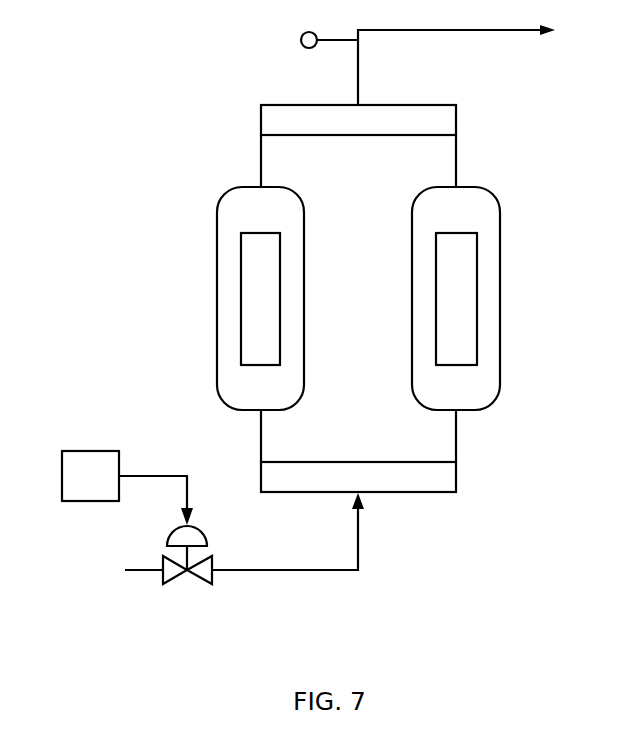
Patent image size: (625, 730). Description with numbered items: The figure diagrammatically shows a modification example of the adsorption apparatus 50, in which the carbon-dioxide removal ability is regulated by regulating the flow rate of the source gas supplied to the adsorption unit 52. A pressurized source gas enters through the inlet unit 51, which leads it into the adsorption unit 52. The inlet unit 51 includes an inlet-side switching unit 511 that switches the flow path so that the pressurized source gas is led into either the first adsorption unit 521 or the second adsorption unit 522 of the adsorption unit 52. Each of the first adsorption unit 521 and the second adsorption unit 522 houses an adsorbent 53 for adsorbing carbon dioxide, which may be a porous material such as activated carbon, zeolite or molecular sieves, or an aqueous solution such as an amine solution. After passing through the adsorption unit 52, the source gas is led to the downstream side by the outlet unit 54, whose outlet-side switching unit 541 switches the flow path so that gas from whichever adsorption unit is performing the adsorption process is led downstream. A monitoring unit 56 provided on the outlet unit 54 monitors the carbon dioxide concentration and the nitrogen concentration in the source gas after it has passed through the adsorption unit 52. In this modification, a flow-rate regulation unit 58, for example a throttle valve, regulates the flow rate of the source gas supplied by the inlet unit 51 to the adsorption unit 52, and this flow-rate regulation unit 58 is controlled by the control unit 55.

The adsorption apparatus 50 is at (66, 43).
The inlet unit 51 is at (358, 548).
The inlet-side switching unit 511 is at (456, 475).
The adsorption unit 52 is at (353, 279).
The first adsorption unit 521 is at (300, 190).
The second adsorption unit 522 is at (494, 190).
The adsorbent 53 is at (260, 311).
The outlet unit 54 is at (358, 70).
The outlet-side switching unit 541 is at (456, 119).
The control unit 55 is at (88, 451).
The monitoring unit 56 is at (301, 40).
The flow-rate regulation unit 58 is at (178, 584).